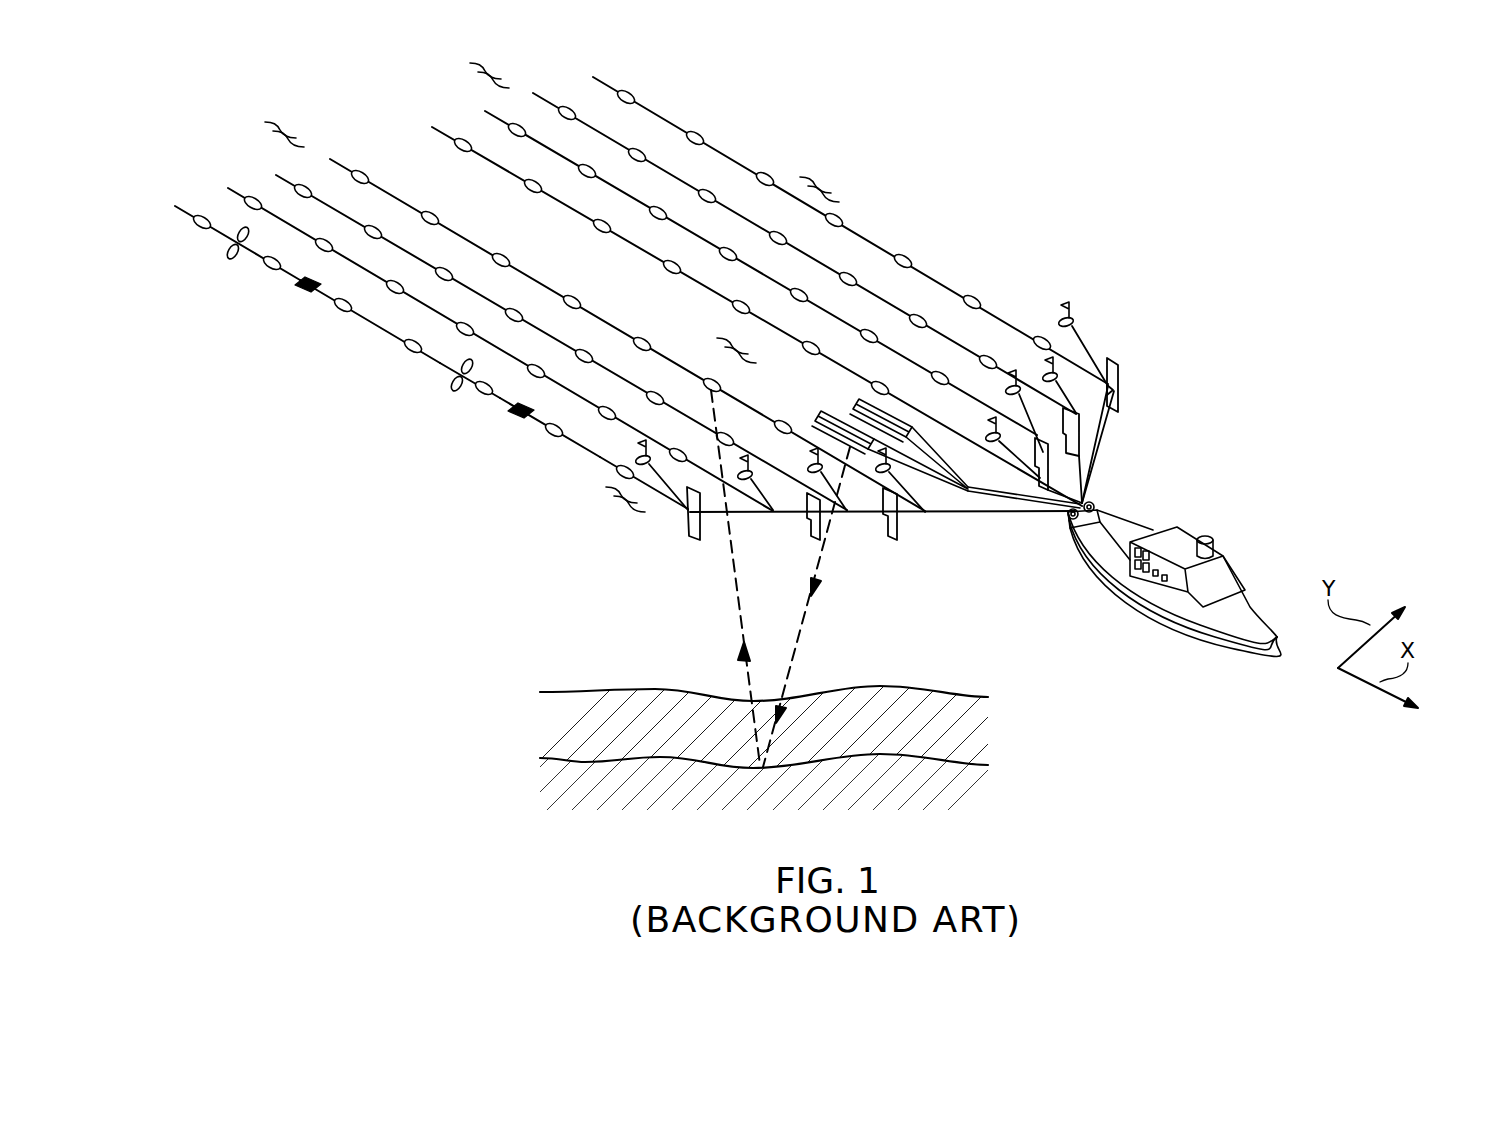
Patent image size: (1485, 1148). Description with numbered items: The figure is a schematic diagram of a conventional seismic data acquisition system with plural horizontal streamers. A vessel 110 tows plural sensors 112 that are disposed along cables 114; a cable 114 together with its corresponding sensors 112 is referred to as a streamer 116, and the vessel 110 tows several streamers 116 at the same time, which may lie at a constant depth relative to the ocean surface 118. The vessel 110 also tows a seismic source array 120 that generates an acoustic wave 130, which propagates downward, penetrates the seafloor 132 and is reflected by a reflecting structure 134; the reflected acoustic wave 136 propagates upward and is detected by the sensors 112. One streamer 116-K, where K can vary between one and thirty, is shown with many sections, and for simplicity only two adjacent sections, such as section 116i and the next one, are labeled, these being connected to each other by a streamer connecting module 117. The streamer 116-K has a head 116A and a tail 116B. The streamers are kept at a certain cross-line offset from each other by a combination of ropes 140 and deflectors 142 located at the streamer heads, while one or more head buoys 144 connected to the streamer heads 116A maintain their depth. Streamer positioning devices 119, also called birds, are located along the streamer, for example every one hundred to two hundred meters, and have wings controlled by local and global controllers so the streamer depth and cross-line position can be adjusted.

The vessel 110 is at (1192, 512).
The sensors 112 is at (636, 91).
The cables 114 is at (655, 112).
The streamer 116 is at (755, 68).
The head 116A is at (680, 502).
The tail 116B is at (186, 210).
The streamer 116-K is at (352, 333).
The streamer section 116i is at (588, 452).
The streamer connecting module 117 is at (512, 416).
The ocean surface 118 is at (818, 178).
The streamer positioning device 119 is at (228, 254).
The seismic source array 120 is at (830, 400).
The acoustic wave 130 is at (800, 636).
The seafloor 132 is at (950, 690).
The reflecting structure 134 is at (980, 760).
The reflected acoustic wave 136 is at (740, 633).
The ropes 140 is at (754, 515).
The deflectors 142 is at (697, 545).
The head buoys 144 is at (1078, 323).